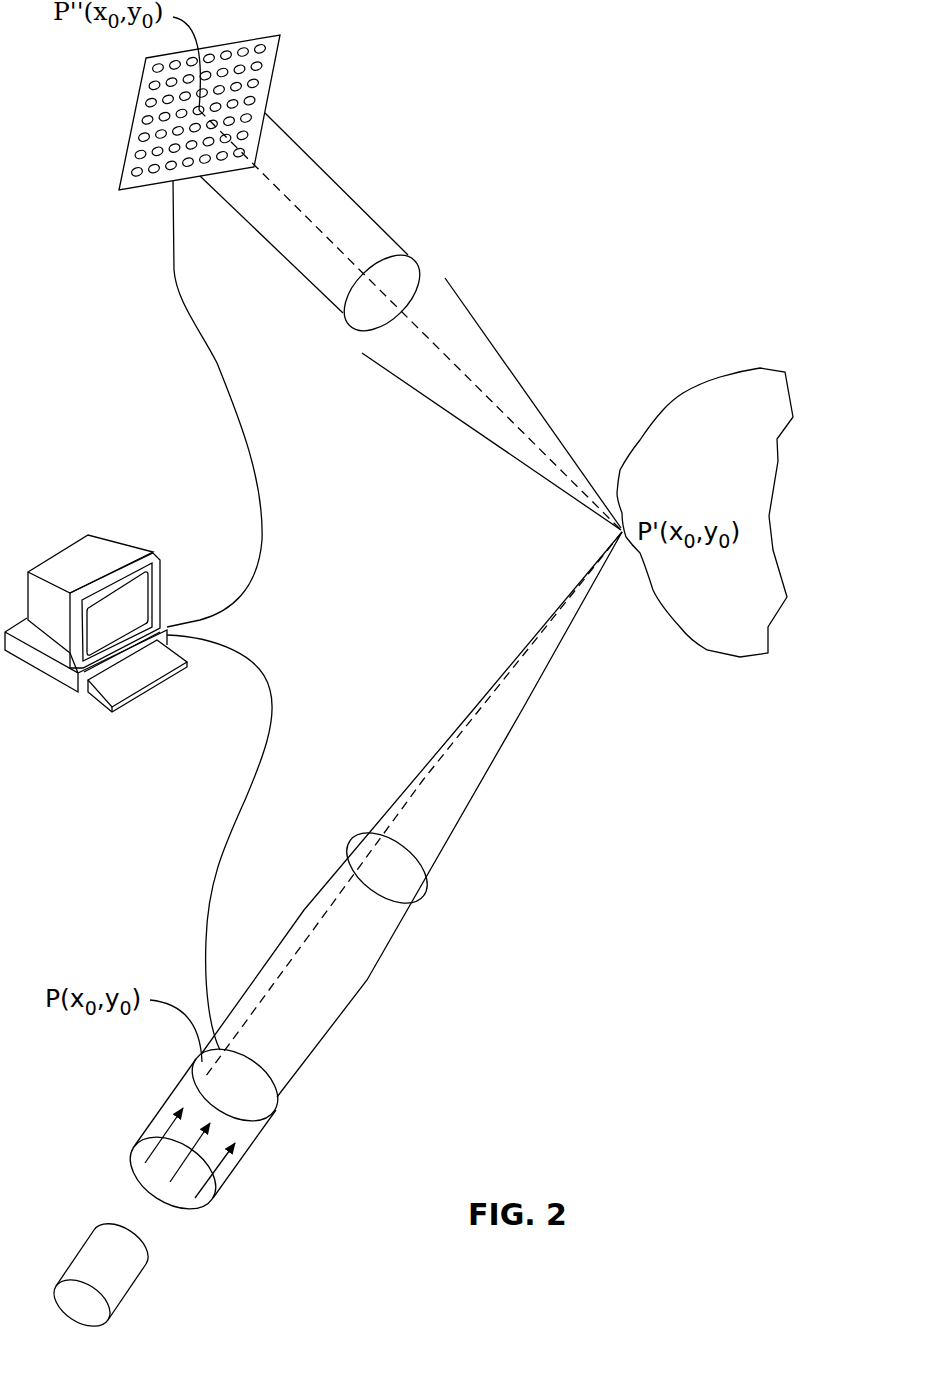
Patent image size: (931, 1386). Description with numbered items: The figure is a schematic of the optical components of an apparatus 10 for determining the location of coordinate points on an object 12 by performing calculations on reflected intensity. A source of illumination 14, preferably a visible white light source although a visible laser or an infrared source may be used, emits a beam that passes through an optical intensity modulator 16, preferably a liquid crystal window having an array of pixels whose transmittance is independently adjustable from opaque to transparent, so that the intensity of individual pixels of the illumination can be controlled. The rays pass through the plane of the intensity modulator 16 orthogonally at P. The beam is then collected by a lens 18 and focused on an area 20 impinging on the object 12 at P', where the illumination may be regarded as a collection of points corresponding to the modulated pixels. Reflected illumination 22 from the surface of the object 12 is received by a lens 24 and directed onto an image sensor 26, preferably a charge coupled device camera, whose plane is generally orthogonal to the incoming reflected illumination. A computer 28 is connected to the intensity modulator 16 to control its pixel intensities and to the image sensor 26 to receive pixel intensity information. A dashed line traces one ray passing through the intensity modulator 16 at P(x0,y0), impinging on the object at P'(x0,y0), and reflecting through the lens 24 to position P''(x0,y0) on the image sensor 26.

The apparatus 10 is at (647, 95).
The object 12 is at (725, 650).
The source of illumination 14 is at (118, 1297).
The optical intensity modulator 16 is at (265, 1105).
The lens 18 is at (405, 895).
The area 20 is at (610, 555).
The reflected illumination 22 is at (512, 403).
The lens 24 is at (350, 312).
The image sensor 26 is at (157, 181).
The computer 28 is at (107, 545).